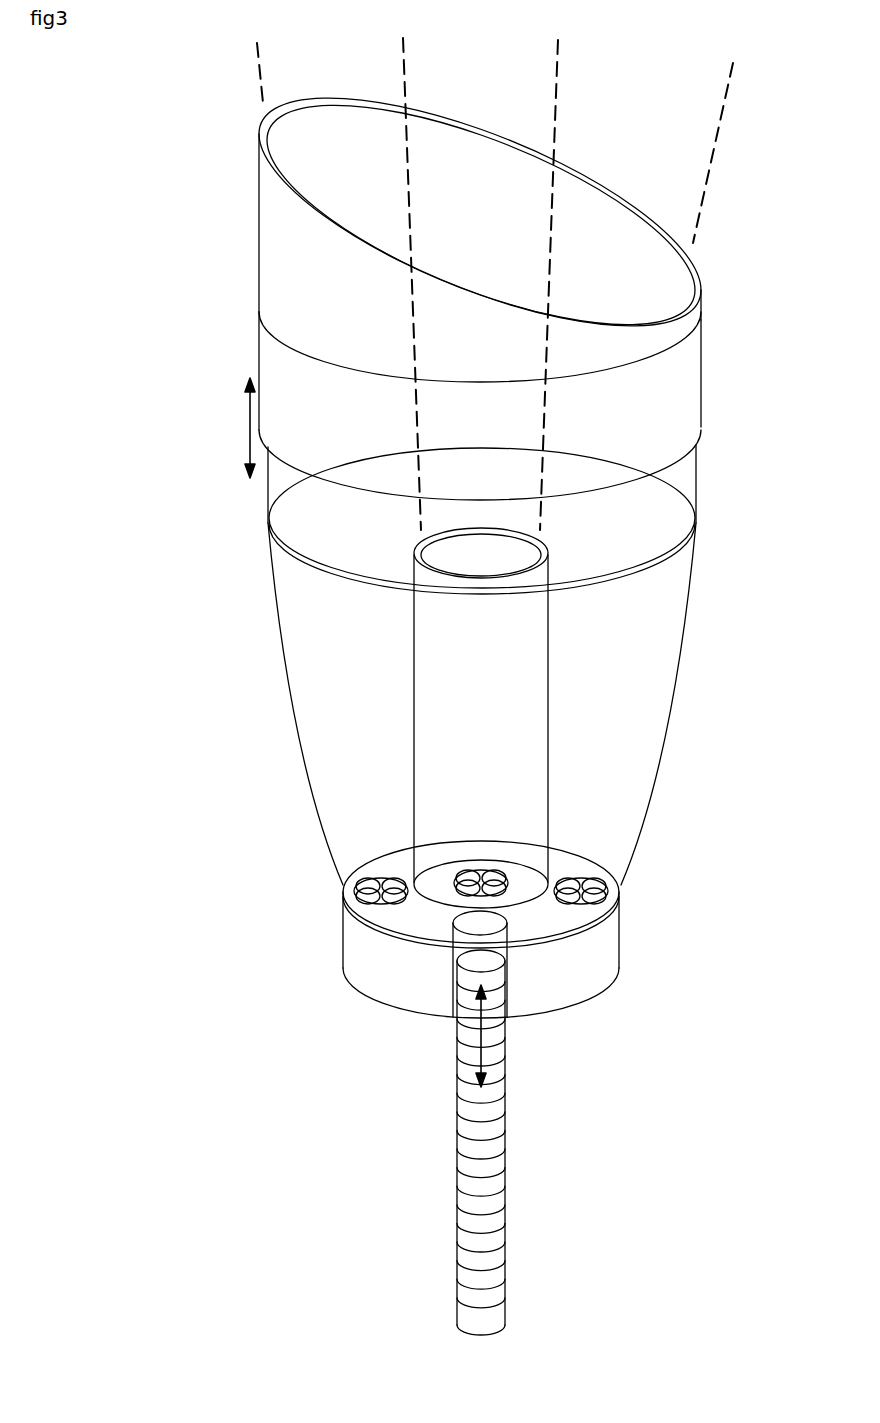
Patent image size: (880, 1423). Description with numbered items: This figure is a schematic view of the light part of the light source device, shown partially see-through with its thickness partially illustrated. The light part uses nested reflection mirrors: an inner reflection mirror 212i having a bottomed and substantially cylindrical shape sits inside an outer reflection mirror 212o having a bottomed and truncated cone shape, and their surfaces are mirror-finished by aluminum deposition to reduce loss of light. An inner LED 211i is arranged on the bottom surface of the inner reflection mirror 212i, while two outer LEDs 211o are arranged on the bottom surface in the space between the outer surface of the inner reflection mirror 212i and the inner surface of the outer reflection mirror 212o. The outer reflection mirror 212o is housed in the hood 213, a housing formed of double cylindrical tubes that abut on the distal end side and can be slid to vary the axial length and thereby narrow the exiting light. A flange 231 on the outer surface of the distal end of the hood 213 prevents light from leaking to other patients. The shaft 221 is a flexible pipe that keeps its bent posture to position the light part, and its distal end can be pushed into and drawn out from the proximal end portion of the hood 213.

The flange 231 is at (266, 232).
The hood 213 is at (268, 347).
The outer reflection mirror 212o is at (304, 523).
The inner reflection mirror 212i is at (420, 626).
The outer LEDs 211o is at (382, 878).
The inner LED 211i is at (481, 870).
The shaft 221 is at (462, 1285).